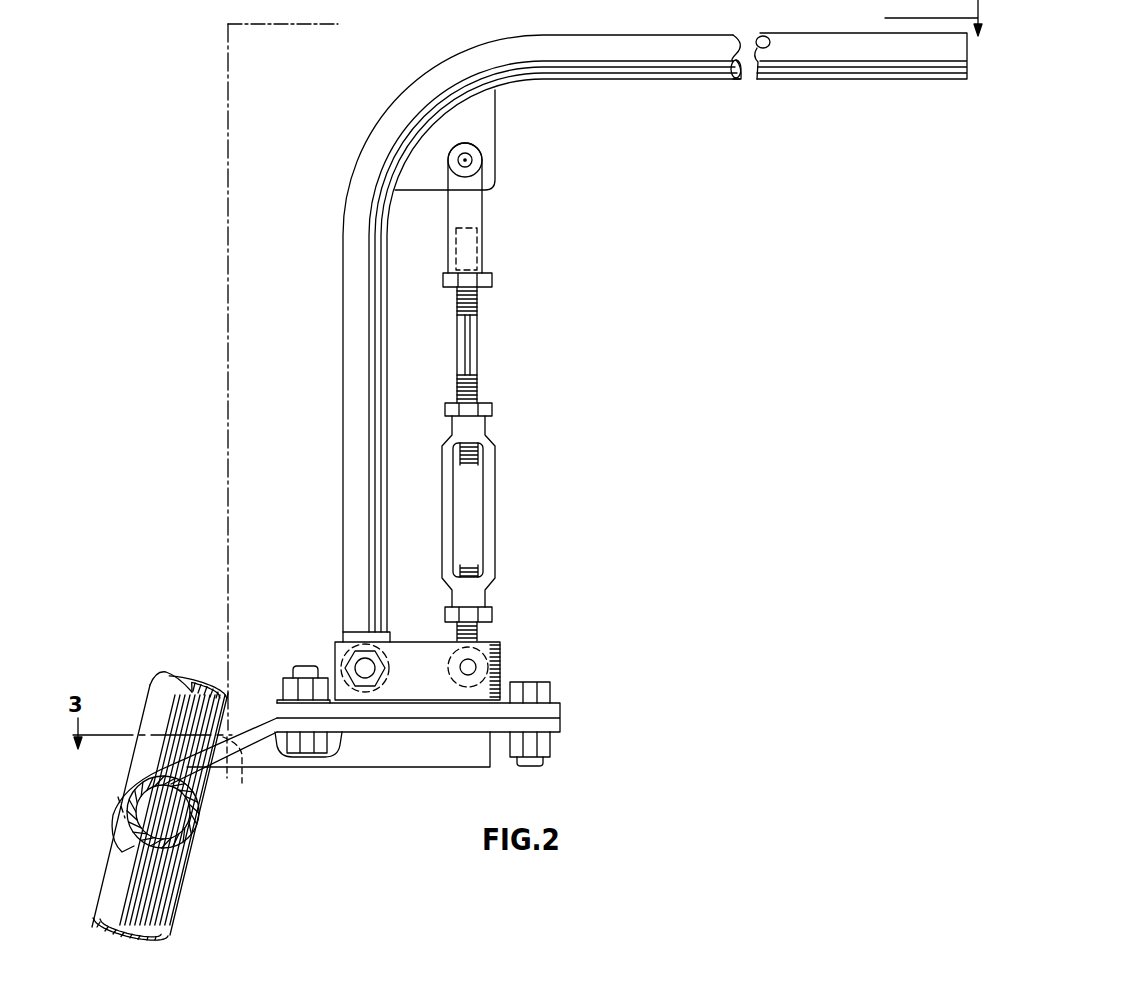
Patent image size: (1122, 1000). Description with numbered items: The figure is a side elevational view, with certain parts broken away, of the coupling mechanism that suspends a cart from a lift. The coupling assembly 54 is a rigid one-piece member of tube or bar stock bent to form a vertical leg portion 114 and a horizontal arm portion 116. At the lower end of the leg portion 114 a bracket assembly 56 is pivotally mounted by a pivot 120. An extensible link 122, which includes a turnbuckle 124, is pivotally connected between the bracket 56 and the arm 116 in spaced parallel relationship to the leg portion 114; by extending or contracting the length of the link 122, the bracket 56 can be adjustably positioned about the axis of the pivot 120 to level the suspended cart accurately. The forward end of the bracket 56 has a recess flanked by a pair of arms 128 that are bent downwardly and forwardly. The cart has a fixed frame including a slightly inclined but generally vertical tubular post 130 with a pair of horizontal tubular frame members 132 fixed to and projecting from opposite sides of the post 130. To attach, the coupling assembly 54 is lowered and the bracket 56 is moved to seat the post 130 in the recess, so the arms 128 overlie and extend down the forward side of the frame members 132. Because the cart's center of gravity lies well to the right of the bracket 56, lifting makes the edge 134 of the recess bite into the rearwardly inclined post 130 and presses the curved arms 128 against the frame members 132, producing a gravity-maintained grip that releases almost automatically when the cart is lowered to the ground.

The coupling assembly 54 is at (324, 221).
The vertical leg portion 114 is at (347, 425).
The horizontal arm portion 116 is at (681, 77).
The extensible link 122 is at (478, 361).
The turnbuckle 124 is at (495, 506).
The bracket assembly 56 is at (511, 636).
The pivot 120 is at (355, 666).
The arms 128 is at (130, 786).
The tubular post 130 is at (158, 688).
The horizontal tubular frame members 132 is at (187, 860).
The edge 134 is at (242, 783).